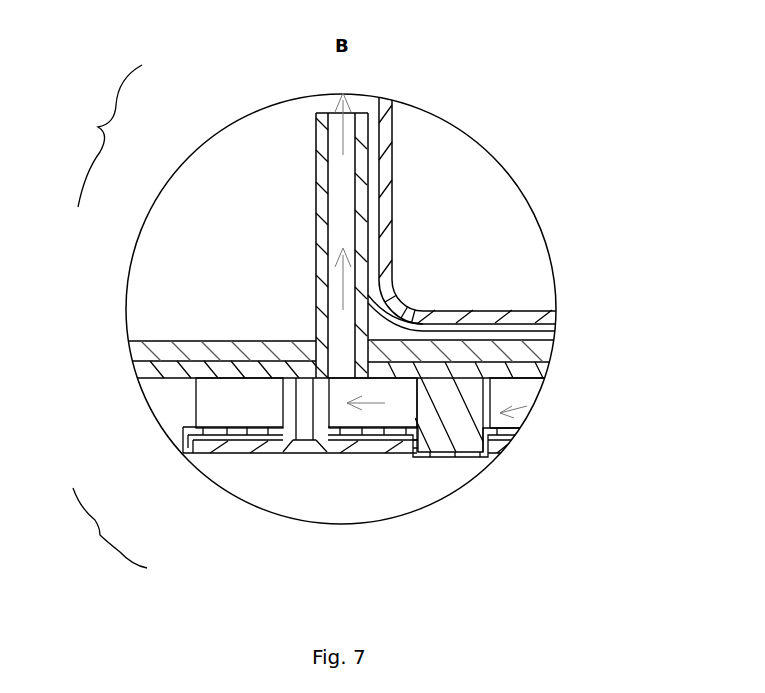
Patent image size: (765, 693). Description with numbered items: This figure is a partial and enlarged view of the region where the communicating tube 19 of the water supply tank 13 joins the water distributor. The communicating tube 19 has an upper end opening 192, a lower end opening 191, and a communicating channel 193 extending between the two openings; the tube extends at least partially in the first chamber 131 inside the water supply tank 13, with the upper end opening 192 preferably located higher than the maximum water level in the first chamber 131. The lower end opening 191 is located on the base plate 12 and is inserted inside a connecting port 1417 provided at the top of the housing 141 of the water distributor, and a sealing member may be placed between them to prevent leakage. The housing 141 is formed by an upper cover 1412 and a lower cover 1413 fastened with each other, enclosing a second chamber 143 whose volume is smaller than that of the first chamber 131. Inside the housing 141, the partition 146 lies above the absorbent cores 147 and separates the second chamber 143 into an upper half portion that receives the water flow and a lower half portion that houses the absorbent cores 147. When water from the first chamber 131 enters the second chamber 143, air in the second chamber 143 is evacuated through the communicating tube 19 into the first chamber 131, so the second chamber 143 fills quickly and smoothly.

The communicating tube 19 is at (105, 136).
The upper end opening 192 is at (317, 140).
The communicating channel 193 is at (335, 254).
The lower end opening 191 is at (318, 329).
The first chamber 131 is at (160, 318).
The water supply tank 13 is at (463, 318).
The base plate 12 is at (187, 348).
The upper cover 1412 is at (197, 400).
The lower cover 1413 is at (257, 452).
The second chamber 143 is at (350, 442).
The partition 146 is at (383, 452).
The absorbent cores 147 is at (448, 450).
The connecting port 1417 is at (368, 367).
The housing 141 is at (107, 528).